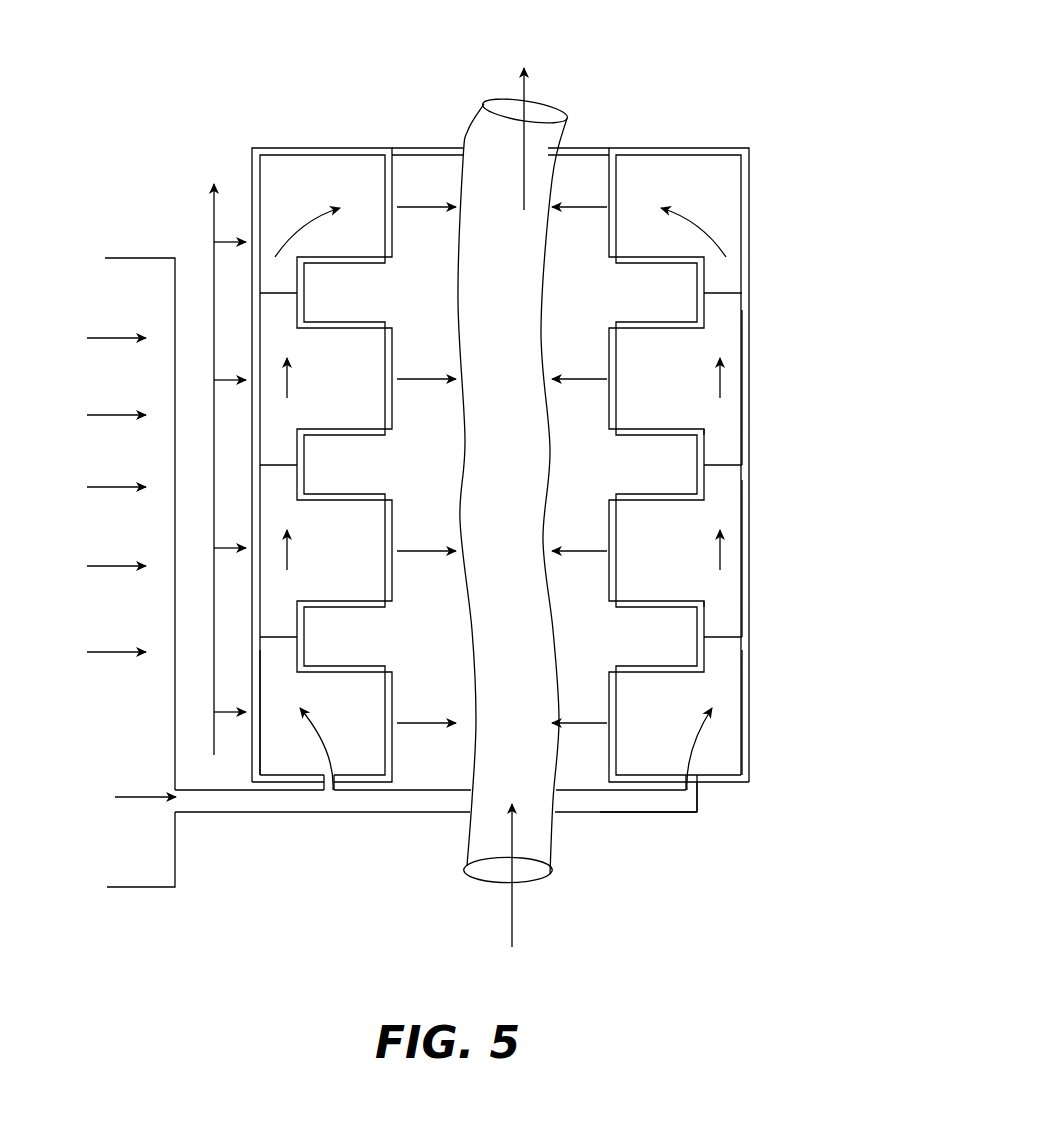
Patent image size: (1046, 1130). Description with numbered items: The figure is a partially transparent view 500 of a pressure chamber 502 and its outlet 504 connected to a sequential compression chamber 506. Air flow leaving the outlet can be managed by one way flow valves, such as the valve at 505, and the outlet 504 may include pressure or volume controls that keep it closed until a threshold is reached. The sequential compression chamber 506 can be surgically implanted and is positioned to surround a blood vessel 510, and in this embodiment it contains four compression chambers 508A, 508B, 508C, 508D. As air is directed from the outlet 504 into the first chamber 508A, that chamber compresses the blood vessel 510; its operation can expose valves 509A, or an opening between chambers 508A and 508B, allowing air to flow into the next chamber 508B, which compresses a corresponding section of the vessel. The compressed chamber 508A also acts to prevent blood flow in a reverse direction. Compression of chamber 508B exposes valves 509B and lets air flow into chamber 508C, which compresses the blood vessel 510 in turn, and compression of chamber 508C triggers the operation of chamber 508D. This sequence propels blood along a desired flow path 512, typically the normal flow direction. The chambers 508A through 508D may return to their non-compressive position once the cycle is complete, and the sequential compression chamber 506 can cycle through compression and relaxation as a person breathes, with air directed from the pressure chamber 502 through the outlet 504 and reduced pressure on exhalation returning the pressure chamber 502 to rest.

The partially transparent view 500 is at (396, 87).
The pressure chamber 502 is at (162, 258).
The outlet 504 is at (633, 812).
The one way flow valve 505 is at (277, 793).
The sequential compression chamber 506 is at (252, 147).
The compression chamber 508A is at (750, 712).
The compression chamber 508B is at (750, 547).
The compression chamber 508C is at (750, 370).
The compression chamber 508D is at (750, 244).
The valve 509A is at (725, 637).
The valve 509B is at (725, 465).
The blood vessel 510 is at (560, 114).
The flow path 512 is at (513, 920).